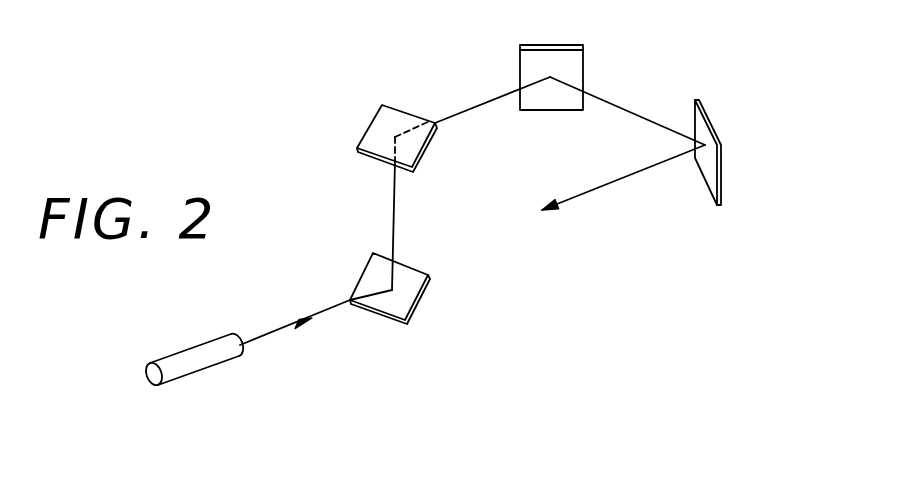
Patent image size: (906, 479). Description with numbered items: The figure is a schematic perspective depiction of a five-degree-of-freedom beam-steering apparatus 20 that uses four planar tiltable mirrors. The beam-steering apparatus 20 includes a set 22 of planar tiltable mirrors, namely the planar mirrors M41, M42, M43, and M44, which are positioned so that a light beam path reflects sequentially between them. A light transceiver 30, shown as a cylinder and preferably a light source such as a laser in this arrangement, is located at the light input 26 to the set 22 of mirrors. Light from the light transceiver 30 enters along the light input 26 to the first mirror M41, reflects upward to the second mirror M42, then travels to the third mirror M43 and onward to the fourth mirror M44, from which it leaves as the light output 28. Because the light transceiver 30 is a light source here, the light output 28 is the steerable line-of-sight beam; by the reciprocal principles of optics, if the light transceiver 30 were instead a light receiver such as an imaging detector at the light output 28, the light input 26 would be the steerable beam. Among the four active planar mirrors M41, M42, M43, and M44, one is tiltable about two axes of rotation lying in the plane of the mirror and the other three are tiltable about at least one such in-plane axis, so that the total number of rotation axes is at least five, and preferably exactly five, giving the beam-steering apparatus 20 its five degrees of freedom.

The beam-steering apparatus 20 is at (445, 53).
The set of planar tiltable mirrors 22 is at (348, 117).
The light input 26 is at (270, 333).
The light output 28 is at (588, 193).
The light transceiver 30 is at (197, 365).
The first planar tiltable mirror M41 is at (390, 258).
The second planar tiltable mirror M42 is at (397, 123).
The third planar tiltable mirror M43 is at (608, 78).
The fourth planar tiltable mirror M44 is at (703, 172).